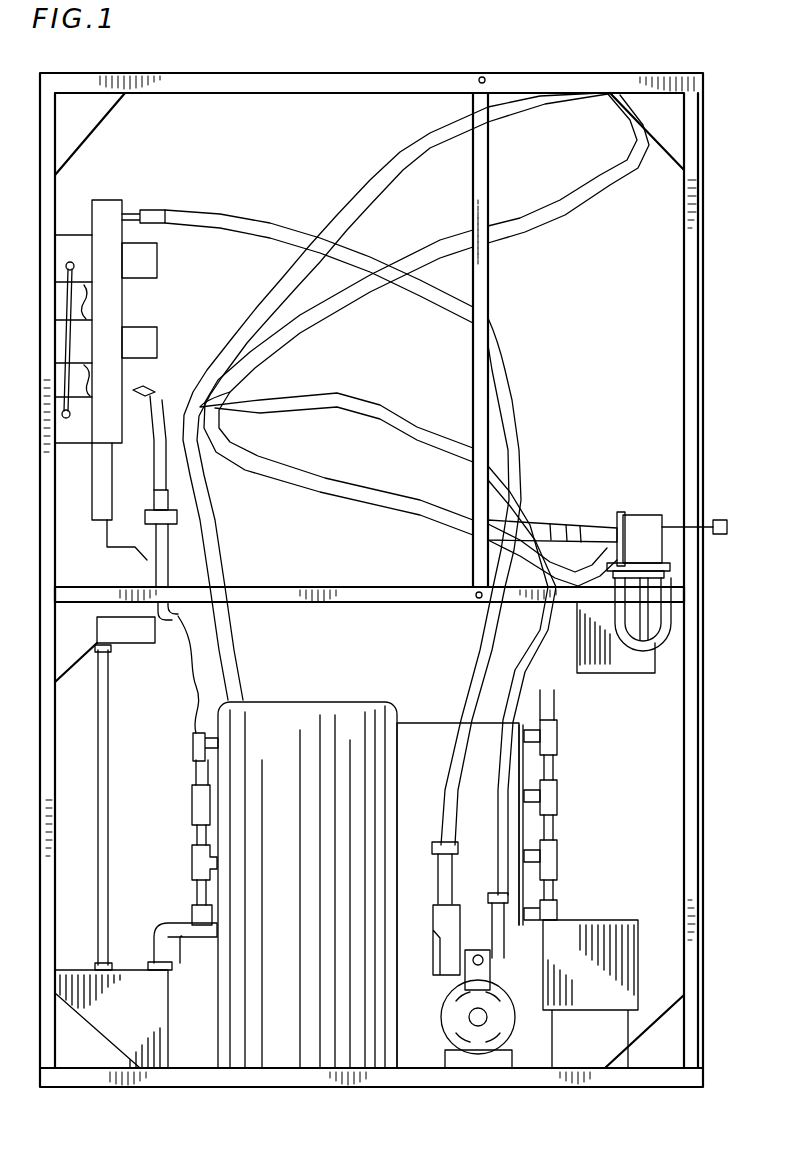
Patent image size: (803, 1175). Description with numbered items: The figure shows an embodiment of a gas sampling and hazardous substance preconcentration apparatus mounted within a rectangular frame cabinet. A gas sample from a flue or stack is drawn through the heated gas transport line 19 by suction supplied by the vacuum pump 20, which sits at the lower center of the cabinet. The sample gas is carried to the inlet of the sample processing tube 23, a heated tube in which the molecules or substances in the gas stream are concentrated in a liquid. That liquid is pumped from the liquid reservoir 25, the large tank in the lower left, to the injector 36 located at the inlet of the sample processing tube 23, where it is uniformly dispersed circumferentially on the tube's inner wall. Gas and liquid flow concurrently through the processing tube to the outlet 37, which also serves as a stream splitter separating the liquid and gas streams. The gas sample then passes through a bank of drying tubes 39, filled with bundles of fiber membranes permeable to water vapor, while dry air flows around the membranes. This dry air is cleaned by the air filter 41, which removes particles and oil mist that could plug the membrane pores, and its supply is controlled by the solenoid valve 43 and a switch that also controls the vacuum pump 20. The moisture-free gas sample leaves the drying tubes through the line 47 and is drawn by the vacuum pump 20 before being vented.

The gas transport line 19 is at (726, 520).
The vacuum pump 20 is at (488, 1050).
The sample processing tube 23 is at (313, 232).
The liquid reservoir 25 is at (228, 808).
The injector 36 is at (591, 528).
The outlet 37 is at (196, 742).
The bank of drying tubes 39 is at (503, 770).
The air filter 41 is at (662, 624).
The solenoid valve 43 is at (607, 515).
The line 47 is at (505, 395).